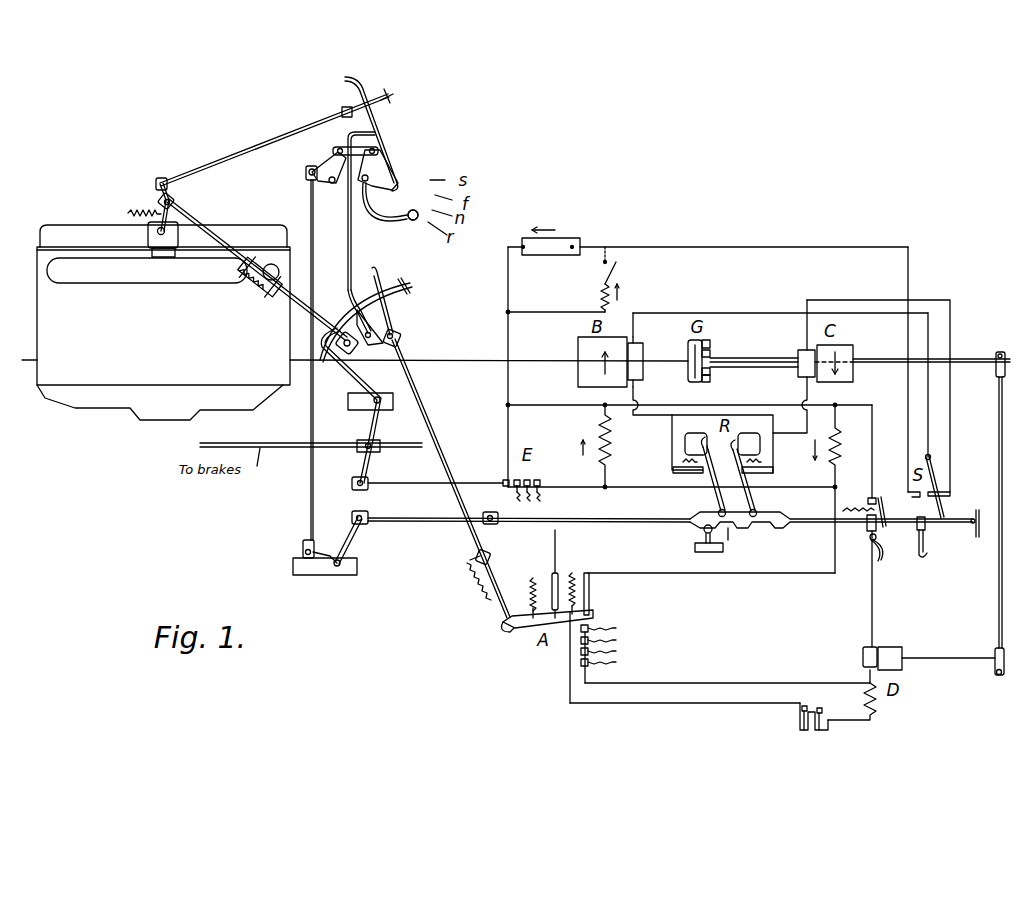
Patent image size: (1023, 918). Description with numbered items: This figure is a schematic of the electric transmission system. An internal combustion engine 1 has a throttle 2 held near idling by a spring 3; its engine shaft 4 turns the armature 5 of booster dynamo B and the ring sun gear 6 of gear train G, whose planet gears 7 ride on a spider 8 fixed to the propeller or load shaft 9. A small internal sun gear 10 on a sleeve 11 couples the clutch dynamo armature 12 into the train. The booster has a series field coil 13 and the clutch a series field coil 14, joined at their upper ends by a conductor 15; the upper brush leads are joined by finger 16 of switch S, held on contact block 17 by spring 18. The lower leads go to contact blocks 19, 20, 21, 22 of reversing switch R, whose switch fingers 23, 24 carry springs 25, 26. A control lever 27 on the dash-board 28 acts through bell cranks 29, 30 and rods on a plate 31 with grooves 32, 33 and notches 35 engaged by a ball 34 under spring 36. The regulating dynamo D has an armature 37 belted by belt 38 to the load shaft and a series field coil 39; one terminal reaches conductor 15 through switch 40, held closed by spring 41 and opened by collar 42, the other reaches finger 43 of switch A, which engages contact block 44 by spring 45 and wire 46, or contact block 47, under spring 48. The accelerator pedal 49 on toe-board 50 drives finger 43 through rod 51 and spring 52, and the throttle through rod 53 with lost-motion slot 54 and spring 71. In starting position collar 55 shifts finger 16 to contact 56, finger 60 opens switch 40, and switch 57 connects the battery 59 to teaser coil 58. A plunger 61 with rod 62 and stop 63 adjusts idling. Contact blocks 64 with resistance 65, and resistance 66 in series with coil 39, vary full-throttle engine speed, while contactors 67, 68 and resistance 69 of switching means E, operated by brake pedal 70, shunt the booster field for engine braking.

The internal combustion engine 1 is at (78, 232).
The throttle 2 is at (157, 232).
The spring 3 is at (140, 210).
The engine shaft 4 is at (478, 363).
The armature 5 is at (593, 352).
The ring sun gear 6 is at (708, 343).
The planet gears 7 is at (709, 354).
The spider 8 is at (696, 372).
The propeller or load shaft 9 is at (880, 362).
The small internal sun gear 10 is at (720, 359).
The sleeve 11 is at (725, 368).
The dynamo armature 12 is at (840, 360).
The series field coil 13 is at (600, 427).
The series field coil 14 is at (841, 441).
The conductor 15 is at (692, 407).
The finger 16 is at (945, 505).
The contact block 17 is at (948, 491).
The spring 18 is at (940, 466).
The contact block 19 is at (673, 471).
The contact block 20 is at (774, 472).
The contact block 21 is at (696, 444).
The contact block 22 is at (749, 444).
The switch finger 23 is at (716, 492).
The switch finger 24 is at (750, 492).
The spring 25 is at (685, 461).
The spring 26 is at (765, 462).
The control lever 27 is at (414, 221).
The dash-board 28 is at (392, 142).
The bell crank 29 is at (335, 168).
The bell crank 30 is at (353, 538).
The plate 31 is at (772, 526).
The groove 32 is at (716, 514).
The groove 33 is at (760, 514).
The ball 34 is at (704, 529).
The notches 35 is at (729, 530).
The spring 36 is at (695, 548).
The armature 37 is at (895, 655).
The belt 38 is at (998, 599).
The field coil 39 is at (878, 710).
The switch 40 is at (884, 508).
The spring 41 is at (862, 506).
The collar 42 is at (868, 534).
The finger 43 is at (520, 626).
The contact block 44 is at (590, 593).
The spring 45 is at (578, 576).
The wire 46 is at (808, 574).
The contact block 47 is at (553, 573).
The spring 48 is at (530, 580).
The accelerator pedal 49 is at (380, 272).
The toe-board 50 is at (348, 296).
The rod 51 is at (432, 421).
The spring 52 is at (470, 582).
The rod 53 is at (190, 223).
The slot 54 is at (360, 357).
The collar 55 is at (975, 530).
The contact 56 is at (908, 492).
The switch 57 is at (600, 268).
The teaser coil 58 is at (600, 294).
The battery 59 is at (558, 244).
The finger 60 is at (925, 553).
The plunger 61 is at (392, 96).
The rod 62 is at (258, 138).
The stop 63 is at (343, 108).
The contact blocks 64 is at (592, 631).
The resistance 65 is at (612, 650).
The resistance 66 is at (817, 735).
The contactor 67 is at (503, 480).
The contactor 68 is at (527, 476).
The resistance 69 is at (517, 498).
The pedal 70 is at (411, 288).
The spring 71 is at (254, 288).